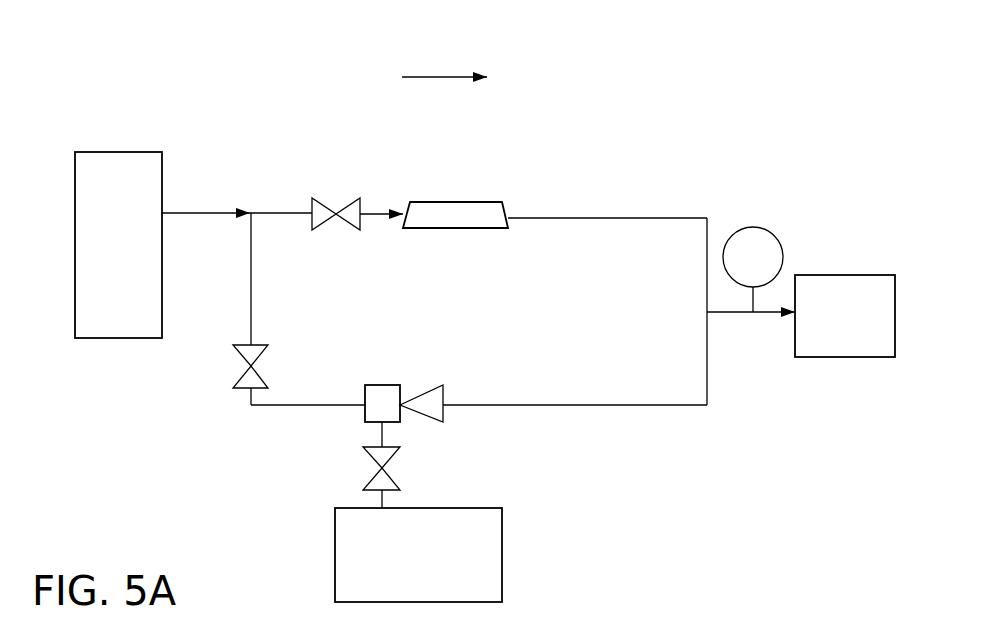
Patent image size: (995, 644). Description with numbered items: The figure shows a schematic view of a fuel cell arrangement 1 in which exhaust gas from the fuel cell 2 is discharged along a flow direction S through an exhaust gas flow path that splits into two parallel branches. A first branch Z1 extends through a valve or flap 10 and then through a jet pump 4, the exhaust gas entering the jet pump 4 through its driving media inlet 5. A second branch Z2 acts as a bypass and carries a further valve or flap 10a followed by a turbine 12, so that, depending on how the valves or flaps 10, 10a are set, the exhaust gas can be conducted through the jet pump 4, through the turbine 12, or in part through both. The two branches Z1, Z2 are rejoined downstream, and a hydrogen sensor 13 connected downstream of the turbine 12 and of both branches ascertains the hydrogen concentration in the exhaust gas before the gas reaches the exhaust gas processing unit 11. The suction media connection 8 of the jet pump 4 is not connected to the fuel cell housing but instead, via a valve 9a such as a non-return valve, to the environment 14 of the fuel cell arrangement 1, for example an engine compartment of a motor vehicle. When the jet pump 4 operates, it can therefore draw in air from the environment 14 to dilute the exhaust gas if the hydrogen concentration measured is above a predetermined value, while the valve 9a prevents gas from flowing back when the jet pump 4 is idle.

The fuel cell arrangement 1 is at (755, 170).
The fuel cell 2 is at (127, 152).
The jet pump 4 is at (367, 408).
The driving media inlet 5 is at (353, 385).
The suction media connection 8 is at (400, 432).
The valve 9a is at (373, 457).
The valve or flap 10 is at (242, 373).
The further valve or flap 10a is at (325, 208).
The exhaust gas processing unit 11 is at (828, 357).
The turbine 12 is at (457, 203).
The hydrogen sensor 13 is at (773, 242).
The environment 14 is at (500, 562).
The flow direction S is at (442, 77).
The first branch of the exhaust gas flow path Z1 is at (628, 452).
The second branch of the exhaust gas flow path Z2 is at (678, 185).